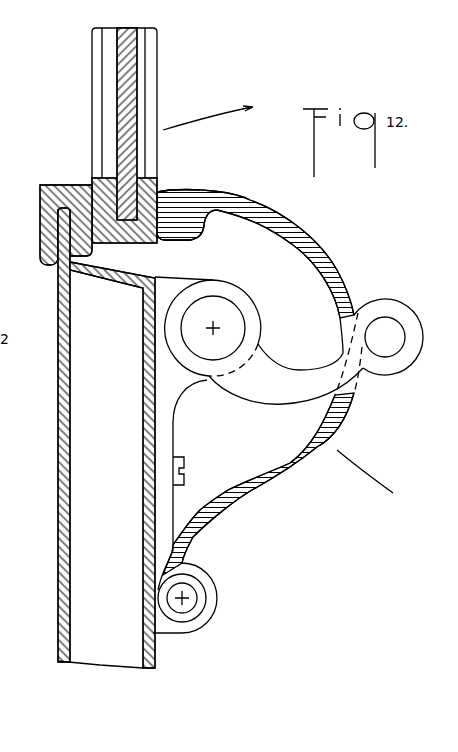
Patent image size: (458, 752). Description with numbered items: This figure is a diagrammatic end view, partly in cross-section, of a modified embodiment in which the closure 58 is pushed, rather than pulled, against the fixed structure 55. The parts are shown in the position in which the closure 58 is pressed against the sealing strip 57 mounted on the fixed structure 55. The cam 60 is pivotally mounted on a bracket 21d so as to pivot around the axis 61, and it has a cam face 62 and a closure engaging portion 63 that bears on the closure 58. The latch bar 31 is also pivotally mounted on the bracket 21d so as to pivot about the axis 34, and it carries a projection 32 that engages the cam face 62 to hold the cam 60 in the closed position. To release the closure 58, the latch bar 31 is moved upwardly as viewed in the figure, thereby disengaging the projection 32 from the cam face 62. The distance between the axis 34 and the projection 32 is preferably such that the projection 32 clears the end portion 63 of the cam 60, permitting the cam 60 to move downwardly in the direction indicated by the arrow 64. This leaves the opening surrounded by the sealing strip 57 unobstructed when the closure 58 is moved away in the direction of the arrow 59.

The closure 58 is at (150, 77).
The arrow 59 is at (207, 120).
The sealing strip 57 is at (38, 223).
The fixed structure 55 is at (63, 420).
The cam 60 is at (333, 265).
The closure engaging portion 63 is at (187, 196).
The axis 34 is at (227, 317).
The latch bar 31 is at (407, 313).
The projection 32 is at (393, 347).
The cam face 62 is at (342, 423).
The arrow 64 is at (386, 476).
The bracket 21d is at (167, 437).
The axis 61 is at (188, 595).